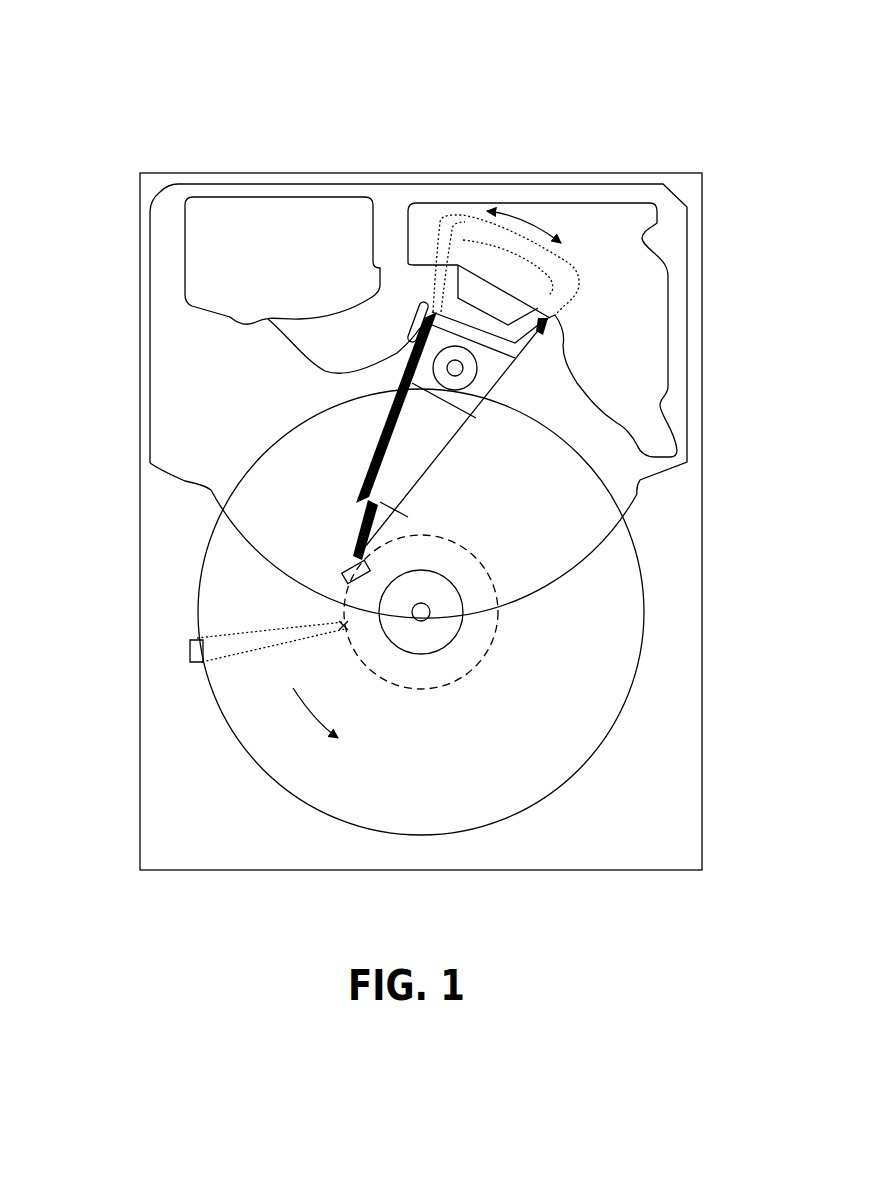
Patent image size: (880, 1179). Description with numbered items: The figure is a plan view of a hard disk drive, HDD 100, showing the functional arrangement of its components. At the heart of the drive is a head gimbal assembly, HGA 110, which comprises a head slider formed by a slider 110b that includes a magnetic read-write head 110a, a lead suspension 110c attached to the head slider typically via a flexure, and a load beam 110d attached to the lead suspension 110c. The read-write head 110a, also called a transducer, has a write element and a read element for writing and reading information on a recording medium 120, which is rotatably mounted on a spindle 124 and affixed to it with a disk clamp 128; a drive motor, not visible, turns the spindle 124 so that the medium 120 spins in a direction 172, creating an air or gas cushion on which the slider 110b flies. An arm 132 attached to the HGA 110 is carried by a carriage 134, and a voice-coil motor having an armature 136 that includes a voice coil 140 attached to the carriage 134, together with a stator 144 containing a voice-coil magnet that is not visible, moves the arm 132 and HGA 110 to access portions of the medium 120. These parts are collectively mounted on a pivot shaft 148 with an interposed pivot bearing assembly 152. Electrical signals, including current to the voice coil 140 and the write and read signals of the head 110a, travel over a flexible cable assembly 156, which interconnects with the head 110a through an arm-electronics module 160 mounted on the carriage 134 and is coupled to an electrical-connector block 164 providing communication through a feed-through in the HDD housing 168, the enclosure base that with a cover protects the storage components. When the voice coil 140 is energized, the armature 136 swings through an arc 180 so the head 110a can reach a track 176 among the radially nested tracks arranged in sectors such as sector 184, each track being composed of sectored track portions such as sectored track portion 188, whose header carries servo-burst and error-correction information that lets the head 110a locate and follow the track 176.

The hard disk drive 100 is at (77, 66).
The head gimbal assembly 110 is at (76, 445).
The magnetic read-write head 110a is at (348, 578).
The slider 110b is at (350, 566).
The lead suspension 110c is at (355, 565).
The load beam 110d is at (353, 560).
The recording medium 120 is at (580, 568).
The spindle 124 is at (432, 612).
The disk clamp 128 is at (440, 630).
The arm 132 is at (413, 468).
The carriage 134 is at (475, 398).
The armature 136 is at (438, 300).
The voice coil 140 is at (452, 225).
The stator 144 is at (638, 285).
The pivot shaft 148 is at (464, 370).
The pivot bearing assembly 152 is at (473, 390).
The flexible cable assembly 156 is at (293, 350).
The arm-electronics module 160 is at (413, 340).
The electrical-connector block 164 is at (208, 260).
The HDD housing 168 is at (703, 178).
The direction of medium rotation 172 is at (327, 710).
The track 176 is at (488, 573).
The arc 180 is at (539, 206).
The sector 184 is at (190, 650).
The sectored track portion 188 is at (338, 620).